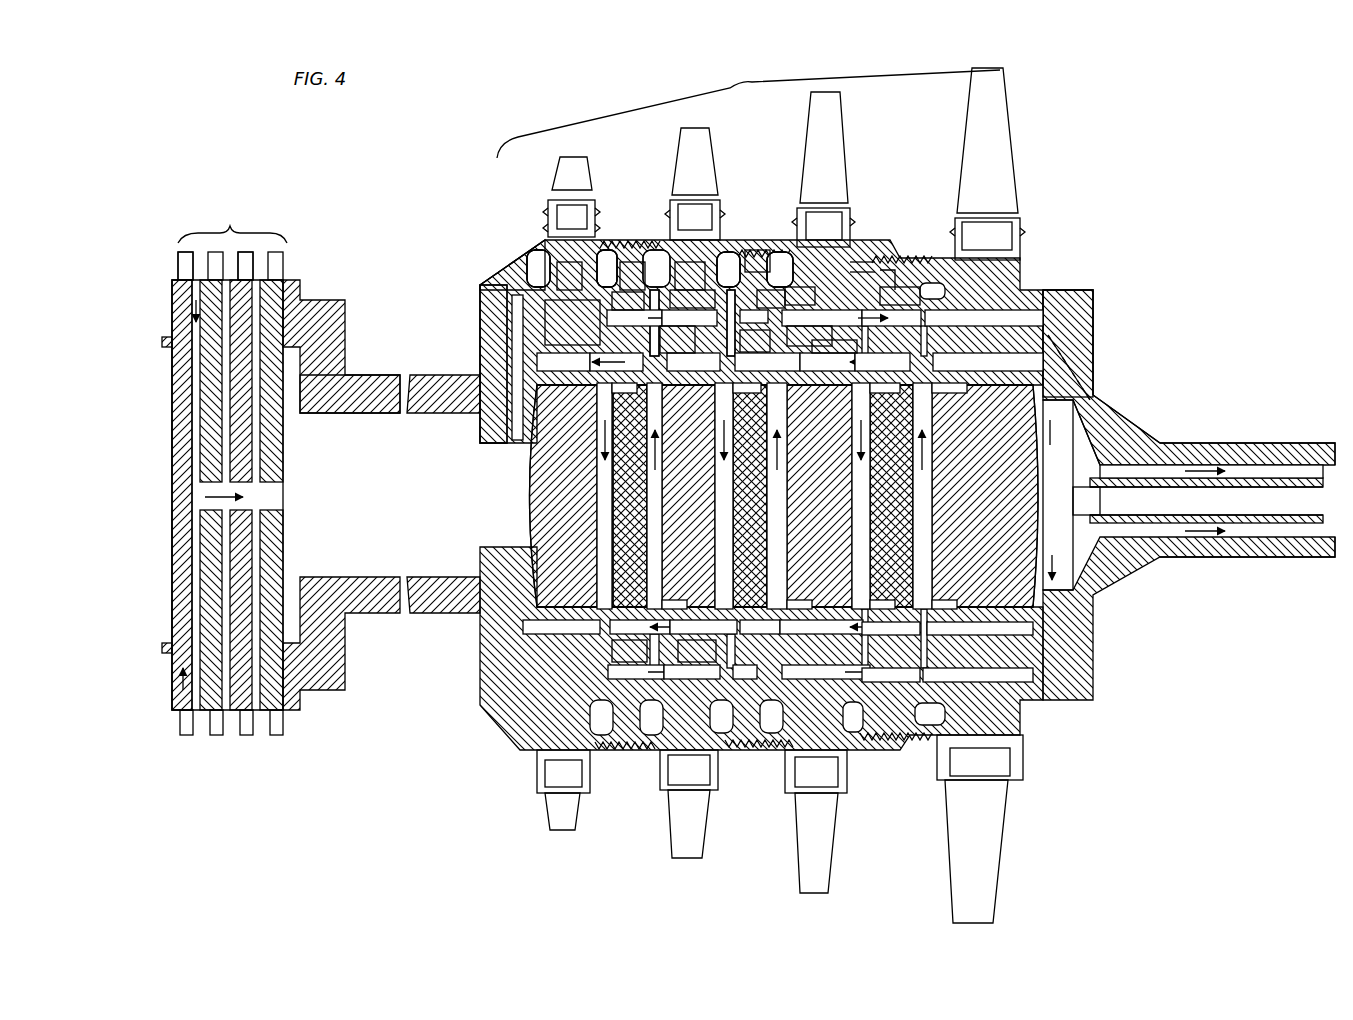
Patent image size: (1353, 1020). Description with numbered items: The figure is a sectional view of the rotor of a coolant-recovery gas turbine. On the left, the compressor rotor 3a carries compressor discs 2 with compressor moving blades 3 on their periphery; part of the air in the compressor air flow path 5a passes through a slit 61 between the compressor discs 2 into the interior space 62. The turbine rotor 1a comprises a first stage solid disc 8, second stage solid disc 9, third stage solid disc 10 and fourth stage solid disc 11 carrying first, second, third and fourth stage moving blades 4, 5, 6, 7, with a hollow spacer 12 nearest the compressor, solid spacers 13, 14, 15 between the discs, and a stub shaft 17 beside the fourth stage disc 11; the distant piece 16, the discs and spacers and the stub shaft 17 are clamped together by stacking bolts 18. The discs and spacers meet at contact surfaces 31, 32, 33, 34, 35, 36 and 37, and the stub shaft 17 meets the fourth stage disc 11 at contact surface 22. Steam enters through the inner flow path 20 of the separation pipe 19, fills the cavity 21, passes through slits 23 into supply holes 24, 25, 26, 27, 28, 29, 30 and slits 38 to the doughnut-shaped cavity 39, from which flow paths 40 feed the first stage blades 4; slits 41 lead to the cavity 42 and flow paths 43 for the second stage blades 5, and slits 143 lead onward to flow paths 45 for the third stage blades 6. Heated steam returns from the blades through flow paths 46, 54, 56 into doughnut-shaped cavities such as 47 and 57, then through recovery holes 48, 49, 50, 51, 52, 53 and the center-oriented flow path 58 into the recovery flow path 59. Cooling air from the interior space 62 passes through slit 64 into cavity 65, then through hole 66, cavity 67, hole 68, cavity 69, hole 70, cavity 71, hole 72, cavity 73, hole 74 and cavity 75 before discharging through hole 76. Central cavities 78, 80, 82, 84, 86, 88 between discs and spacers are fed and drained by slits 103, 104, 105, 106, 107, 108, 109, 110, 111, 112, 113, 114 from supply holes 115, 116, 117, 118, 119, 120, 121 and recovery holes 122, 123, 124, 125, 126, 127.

The turbine rotor 1a is at (748, 104).
The compressor discs 2 is at (175, 382).
The compressor moving blades 3 is at (178, 268).
The compressor rotor 3a is at (232, 223).
The compressor air flow path 5a is at (221, 257).
The first stage moving blades 4 is at (565, 178).
The second stage moving blades 5 is at (690, 160).
The third stage moving blades 6 is at (815, 140).
The fourth stage moving blades 7 is at (965, 132).
The first stage solid disc 8 is at (564, 496).
The second stage solid disc 9 is at (688, 496).
The third stage solid disc 10 is at (819, 496).
The fourth stage solid disc 11 is at (985, 496).
The hollow spacer 12 is at (527, 420).
The solid spacer 13 is at (630, 496).
The solid spacer 14 is at (750, 496).
The solid spacer 15 is at (891, 496).
The distant piece 16 is at (350, 394).
The stub shaft 17 is at (1110, 398).
The stacking bolts 18 is at (1093, 315).
The separation pipe 19 is at (1250, 445).
The inner flow path 20 is at (1130, 503).
The cavity 21 is at (1077, 501).
The contact surface 22 is at (1060, 288).
The slits 23 is at (1056, 495).
The supply holes 24 is at (988, 362).
The supply hole 25 is at (882, 363).
The supply hole 26 is at (842, 363).
The supply hole 27 is at (767, 362).
The supply hole 28 is at (693, 362).
The supply hole 29 is at (616, 362).
The supply holes 30 is at (563, 362).
The contact surface 31 is at (918, 262).
The contact surface 32 is at (895, 263).
The contact surface 33 is at (770, 247).
The contact surface 34 is at (692, 299).
The contact surface 35 is at (650, 252).
The contact surface 36 is at (572, 322).
The contact surface 37 is at (535, 275).
The slits 38 is at (510, 345).
The doughnut-shaped cavity 39 is at (500, 287).
The flow paths 40 is at (547, 250).
The slits 41 is at (755, 341).
The doughnut-shaped cavity 42 is at (771, 299).
The flow paths 43 is at (720, 227).
The flow paths 45 is at (790, 237).
The flow paths 46 is at (595, 235).
The doughnut-shaped cavity 47 is at (628, 301).
The recovery hole 48 is at (647, 319).
The recovery hole 49 is at (689, 319).
The recovery hole 50 is at (754, 318).
The recovery hole 51 is at (822, 319).
The recovery hole 52 is at (889, 319).
The recovery hole 53 is at (984, 320).
The flow paths 54 is at (670, 225).
The flow paths 56 is at (860, 227).
The doughnut-shaped cavity 57 is at (900, 296).
The center-oriented flow path 58 is at (1093, 365).
The recovery flow path 59 is at (1185, 450).
The slit 61 is at (172, 310).
The interior space 62 is at (432, 497).
The slit 64 is at (505, 318).
The doughnut-shaped cavity 65 is at (538, 268).
The hole 66 is at (569, 276).
The doughnut-shaped cavity 67 is at (607, 268).
The hole 68 is at (632, 276).
The cavity 69 is at (656, 268).
The hole 70 is at (690, 276).
The cavity 71 is at (728, 269).
The hole 72 is at (757, 261).
The cavity 73 is at (780, 269).
The hole 74 is at (800, 296).
The cavity 75 is at (866, 258).
The hole 76 is at (862, 255).
The cavity 78 is at (607, 496).
The cavity 80 is at (655, 496).
The cavity 82 is at (726, 496).
The cavity 84 is at (775, 496).
The cavity 86 is at (863, 496).
The cavity 88 is at (921, 496).
The slits 103 is at (625, 384).
The slits 104 is at (629, 651).
The slits 105 is at (681, 605).
The slits 106 is at (677, 339).
The slits 107 is at (747, 384).
The slits 108 is at (697, 651).
The slits 109 is at (805, 605).
The slits 110 is at (809, 336).
The slits 111 is at (894, 388).
The slits 112 is at (887, 605).
The slits 113 is at (950, 605).
The slits 114 is at (955, 391).
The supply hole 115 is at (980, 630).
The supply hole 116 is at (891, 630).
The supply hole 117 is at (832, 627).
The supply hole 118 is at (757, 627).
The supply hole 119 is at (703, 627).
The supply hole 120 is at (650, 627).
The supply hole 121 is at (561, 627).
The recovery hole 122 is at (648, 670).
The recovery hole 123 is at (692, 672).
The recovery hole 124 is at (747, 672).
The recovery hole 125 is at (831, 672).
The recovery hole 126 is at (891, 675).
The recovery hole 127 is at (978, 675).
The slits 143 is at (834, 350).